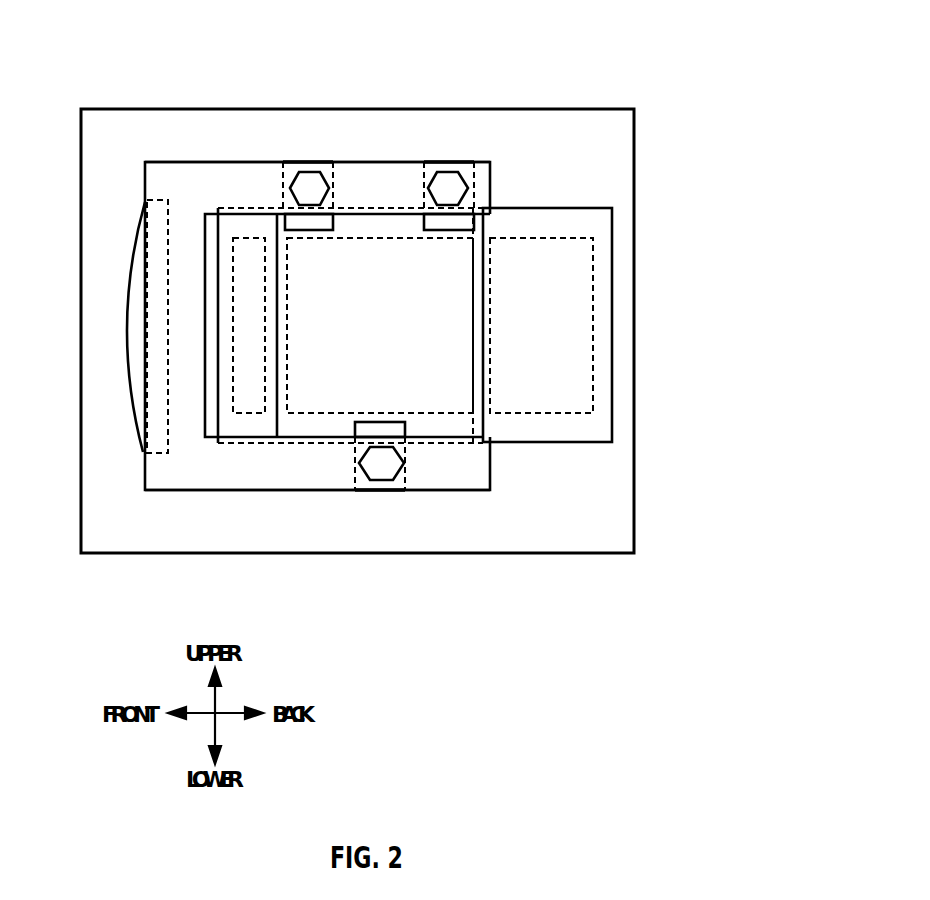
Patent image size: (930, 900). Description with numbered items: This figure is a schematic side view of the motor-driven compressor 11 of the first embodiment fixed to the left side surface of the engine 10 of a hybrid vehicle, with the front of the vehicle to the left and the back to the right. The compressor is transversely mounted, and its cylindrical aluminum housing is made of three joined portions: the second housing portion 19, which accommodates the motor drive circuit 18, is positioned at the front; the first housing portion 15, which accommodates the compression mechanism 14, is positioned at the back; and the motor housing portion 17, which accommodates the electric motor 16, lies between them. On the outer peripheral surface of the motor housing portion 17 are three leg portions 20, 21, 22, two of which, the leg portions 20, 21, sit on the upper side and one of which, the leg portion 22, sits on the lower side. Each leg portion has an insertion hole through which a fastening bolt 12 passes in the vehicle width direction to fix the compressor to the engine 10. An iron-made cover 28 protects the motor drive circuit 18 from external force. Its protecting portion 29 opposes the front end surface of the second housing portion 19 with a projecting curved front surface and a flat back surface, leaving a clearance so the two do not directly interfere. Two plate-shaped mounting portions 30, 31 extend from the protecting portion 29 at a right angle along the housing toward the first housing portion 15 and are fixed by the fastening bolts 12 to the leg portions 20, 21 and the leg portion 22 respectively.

The engine 10 is at (529, 108).
The motor-driven compressor 11 is at (566, 181).
The fastening bolt 12 is at (308, 172).
The compression mechanism 14 is at (557, 415).
The first housing portion 15 is at (612, 292).
The electric motor 16 is at (440, 415).
The motor housing portion 17 is at (315, 423).
The motor drive circuit 18 is at (250, 415).
The second housing portion 19 is at (218, 262).
The leg portion 20 is at (483, 175).
The leg portion 21 is at (285, 181).
The leg portion 22 is at (405, 473).
The cover 28 is at (175, 160).
The protecting portion 29 is at (128, 358).
The mounting portion 30 is at (381, 185).
The mounting portion 31 is at (332, 473).